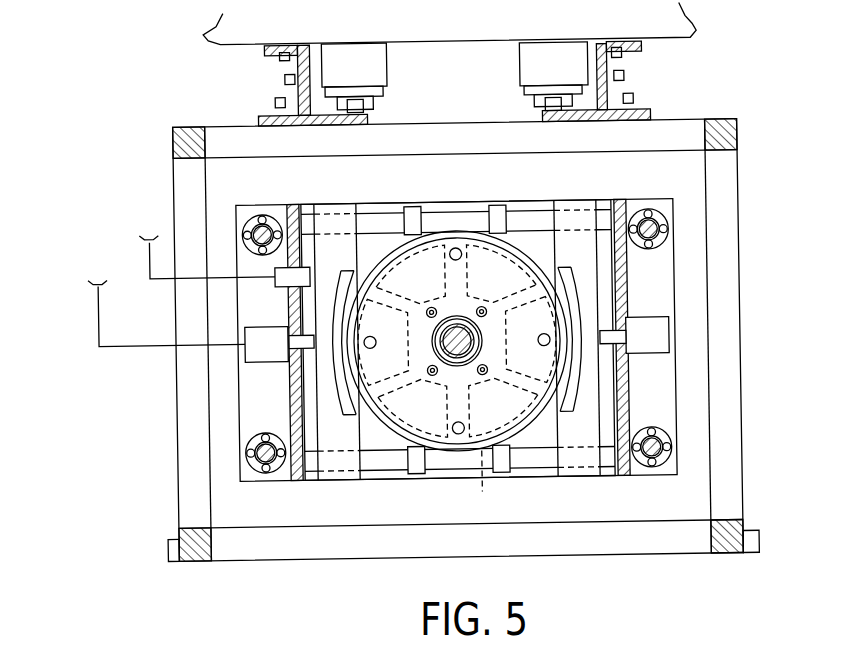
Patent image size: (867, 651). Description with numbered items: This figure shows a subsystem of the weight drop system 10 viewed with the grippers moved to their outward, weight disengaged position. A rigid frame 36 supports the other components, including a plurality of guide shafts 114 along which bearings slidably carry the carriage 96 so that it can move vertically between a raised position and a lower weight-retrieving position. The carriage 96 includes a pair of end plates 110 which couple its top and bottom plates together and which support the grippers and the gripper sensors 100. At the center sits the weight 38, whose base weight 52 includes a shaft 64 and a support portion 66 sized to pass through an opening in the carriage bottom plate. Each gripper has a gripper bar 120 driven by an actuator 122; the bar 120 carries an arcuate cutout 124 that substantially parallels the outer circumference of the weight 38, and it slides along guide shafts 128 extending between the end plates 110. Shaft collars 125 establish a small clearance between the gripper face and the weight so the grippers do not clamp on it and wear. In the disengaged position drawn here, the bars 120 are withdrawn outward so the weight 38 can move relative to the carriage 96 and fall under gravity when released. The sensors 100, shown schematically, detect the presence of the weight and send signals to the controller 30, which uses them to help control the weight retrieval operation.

The weight drop system 10 is at (766, 70).
The controller 30 is at (134, 227).
The frame 36 is at (741, 140).
The weight 38 is at (516, 438).
The base weight 52 is at (447, 228).
The shaft 64 is at (464, 352).
The support portion 66 is at (484, 482).
The carriage 96 is at (297, 486).
The gripper sensors 100 is at (274, 284).
The end plates 110 is at (289, 410).
The guide shafts 114 is at (265, 212).
The gripper bar 120 is at (594, 422).
The actuator 122 is at (243, 352).
The arcuate cutout 124 is at (571, 290).
The shaft collars 125 is at (414, 206).
The guide shafts 128 is at (538, 214).